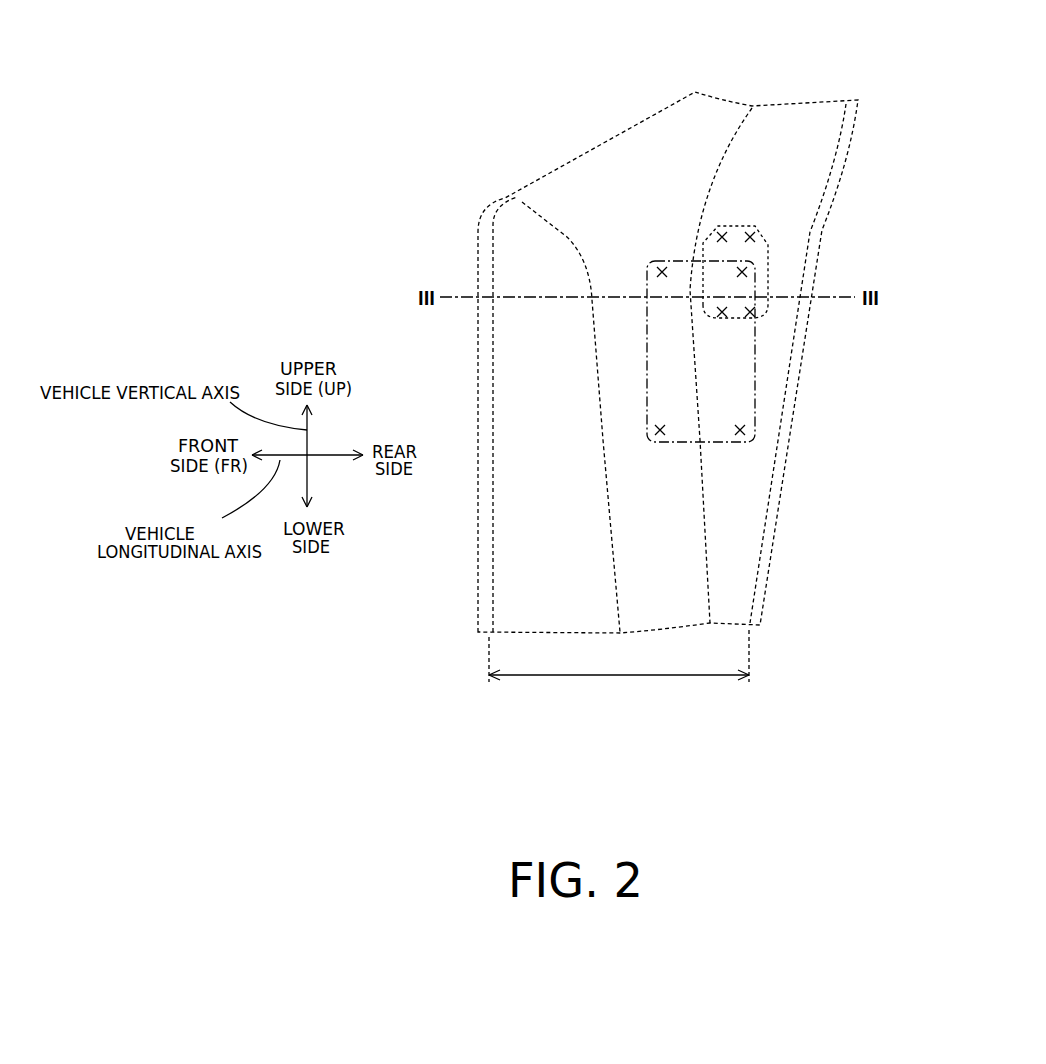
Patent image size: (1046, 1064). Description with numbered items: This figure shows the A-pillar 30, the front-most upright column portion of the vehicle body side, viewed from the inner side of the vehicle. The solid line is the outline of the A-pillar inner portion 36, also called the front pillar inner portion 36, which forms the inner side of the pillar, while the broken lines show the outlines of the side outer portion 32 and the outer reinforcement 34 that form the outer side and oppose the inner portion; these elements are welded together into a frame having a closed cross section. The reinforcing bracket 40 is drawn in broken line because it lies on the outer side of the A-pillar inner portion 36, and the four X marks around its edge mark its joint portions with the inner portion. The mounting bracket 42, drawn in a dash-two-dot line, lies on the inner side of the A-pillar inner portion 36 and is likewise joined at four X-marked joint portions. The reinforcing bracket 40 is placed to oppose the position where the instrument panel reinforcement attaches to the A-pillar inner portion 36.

The A-pillar 30 is at (548, 158).
The side outer portion 32 is at (619, 683).
The outer reinforcement 34 is at (620, 676).
The front pillar inner portion 36 is at (778, 528).
The reinforcing bracket 40 is at (768, 268).
The mounting bracket 42 is at (755, 388).